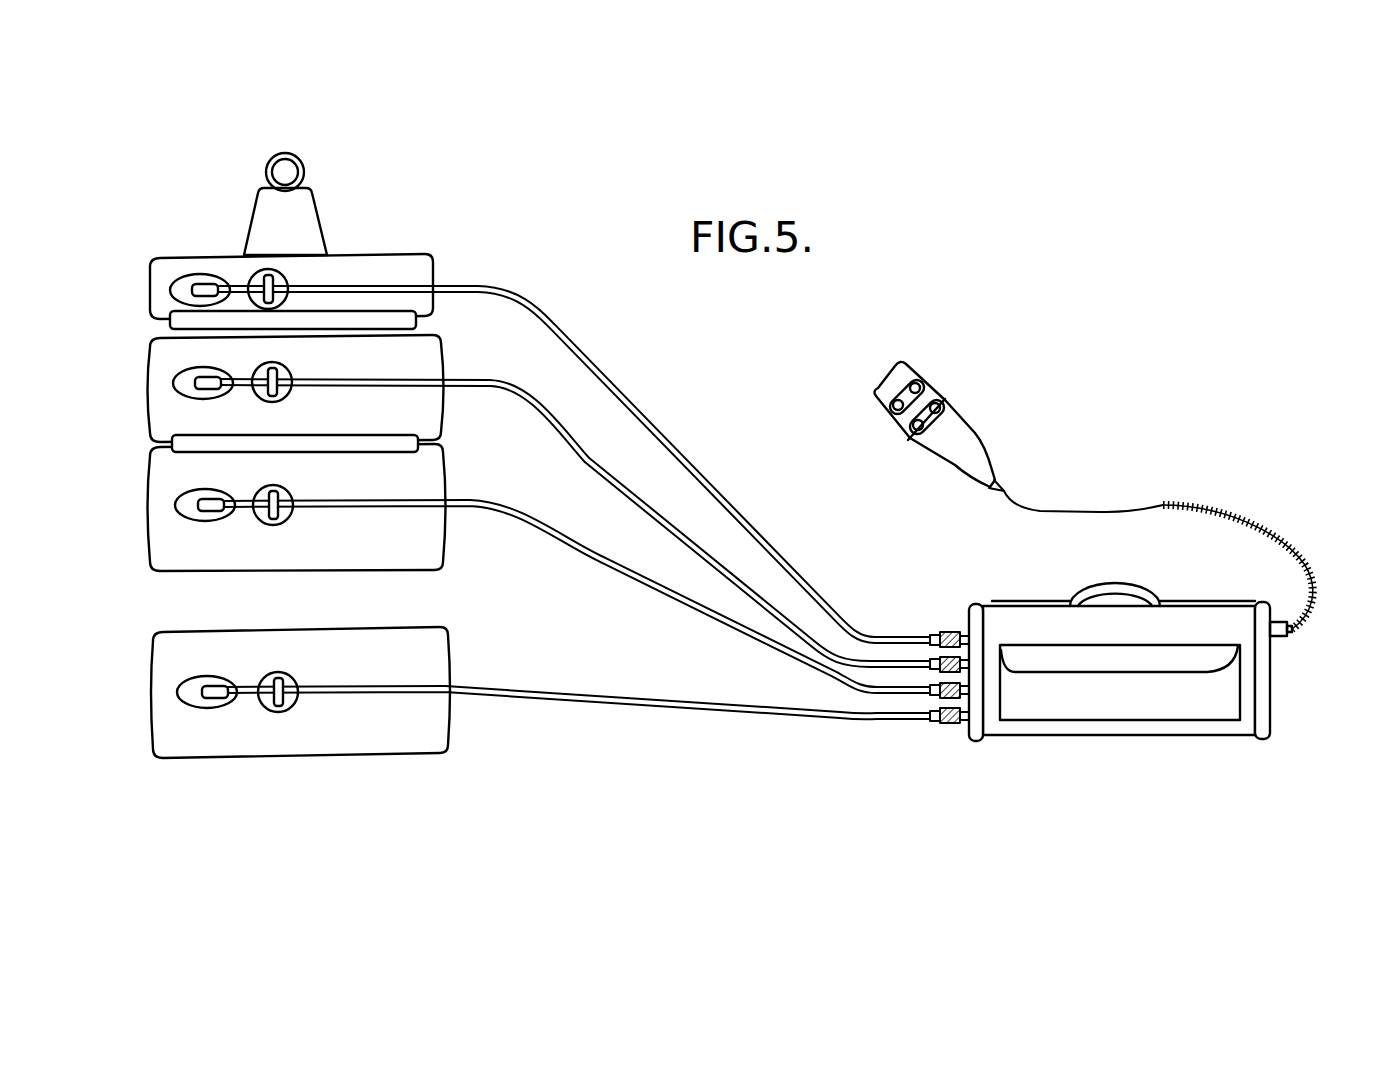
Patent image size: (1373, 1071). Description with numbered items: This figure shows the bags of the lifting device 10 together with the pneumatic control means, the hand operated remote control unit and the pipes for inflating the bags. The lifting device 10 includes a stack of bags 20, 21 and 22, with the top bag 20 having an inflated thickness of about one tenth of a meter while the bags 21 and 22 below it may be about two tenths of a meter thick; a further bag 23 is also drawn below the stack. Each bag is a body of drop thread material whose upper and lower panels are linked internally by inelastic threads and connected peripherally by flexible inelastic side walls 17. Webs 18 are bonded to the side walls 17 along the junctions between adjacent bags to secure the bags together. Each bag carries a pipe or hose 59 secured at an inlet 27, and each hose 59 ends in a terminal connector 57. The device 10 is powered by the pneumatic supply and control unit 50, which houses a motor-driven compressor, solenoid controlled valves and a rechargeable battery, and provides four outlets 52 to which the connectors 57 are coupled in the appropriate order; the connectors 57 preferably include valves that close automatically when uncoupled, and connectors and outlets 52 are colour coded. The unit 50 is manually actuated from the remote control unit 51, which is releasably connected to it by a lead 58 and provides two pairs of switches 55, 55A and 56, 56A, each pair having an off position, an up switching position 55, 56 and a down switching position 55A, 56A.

The lifting device 10 is at (352, 253).
The side walls 17 is at (283, 478).
The webs 18 is at (182, 321).
The top bag 20 is at (418, 262).
The bag 21 is at (374, 431).
The bag 22 is at (375, 553).
The fourth inflatable cell 23 is at (372, 735).
The inlet 27 is at (202, 285).
The pneumatic supply and control unit 50 is at (1158, 656).
The remote control unit 51 is at (984, 426).
The outlets 52 is at (963, 637).
The switch (up switching position) 55 is at (897, 394).
The switch (down switching position) 55A is at (895, 405).
The switch (up switching position) 56 is at (933, 444).
The switch (down switching position) 56A is at (918, 431).
The terminal connector 57 is at (937, 652).
The lead 58 is at (1310, 610).
The pipe or hose 59 is at (667, 522).